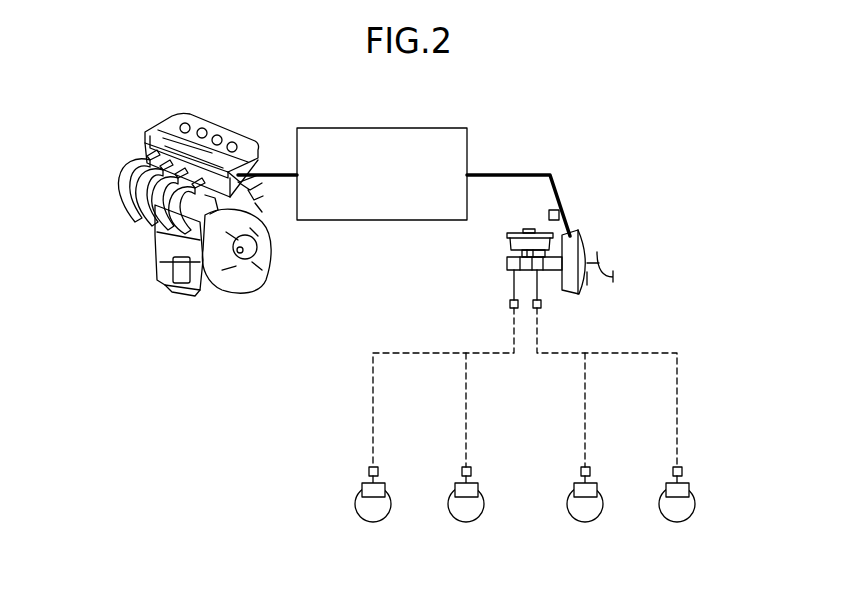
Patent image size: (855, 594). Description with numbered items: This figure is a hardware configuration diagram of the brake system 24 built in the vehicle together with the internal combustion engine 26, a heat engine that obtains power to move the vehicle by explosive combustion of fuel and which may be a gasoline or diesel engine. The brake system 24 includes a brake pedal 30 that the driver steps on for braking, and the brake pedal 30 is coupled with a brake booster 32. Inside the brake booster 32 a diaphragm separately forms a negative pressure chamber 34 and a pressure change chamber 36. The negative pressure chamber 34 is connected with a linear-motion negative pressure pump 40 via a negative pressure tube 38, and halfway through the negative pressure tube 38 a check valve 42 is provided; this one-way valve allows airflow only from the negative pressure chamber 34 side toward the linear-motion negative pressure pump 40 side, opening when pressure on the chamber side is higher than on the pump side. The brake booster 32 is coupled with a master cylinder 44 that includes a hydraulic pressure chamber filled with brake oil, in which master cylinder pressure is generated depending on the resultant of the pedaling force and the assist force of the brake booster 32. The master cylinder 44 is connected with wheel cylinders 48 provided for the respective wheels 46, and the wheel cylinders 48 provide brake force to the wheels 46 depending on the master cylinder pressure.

The brake system 24 is at (681, 285).
The internal combustion engine 26 is at (157, 258).
The brake pedal 30 is at (602, 262).
The brake booster 32 is at (590, 287).
The negative pressure chamber 34 is at (569, 290).
The pressure change chamber 36 is at (586, 248).
The negative pressure tube 38 is at (490, 173).
The linear-motion negative pressure pump 40 is at (382, 127).
The check valve 42 is at (560, 214).
The master cylinder 44 is at (507, 263).
The wheels 46 is at (370, 522).
The wheel cylinders 48 is at (368, 471).